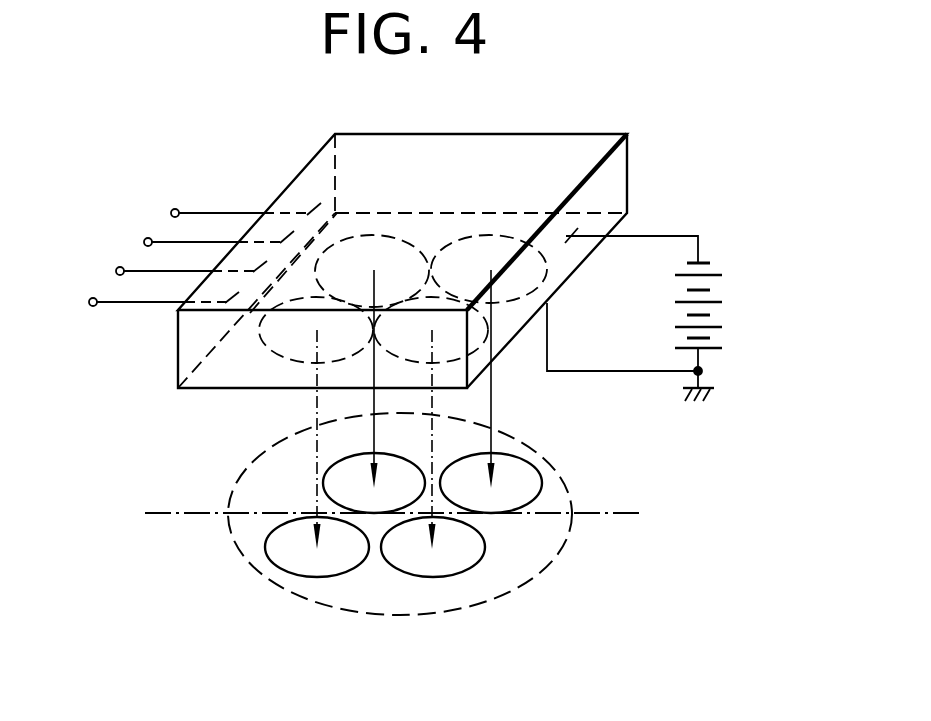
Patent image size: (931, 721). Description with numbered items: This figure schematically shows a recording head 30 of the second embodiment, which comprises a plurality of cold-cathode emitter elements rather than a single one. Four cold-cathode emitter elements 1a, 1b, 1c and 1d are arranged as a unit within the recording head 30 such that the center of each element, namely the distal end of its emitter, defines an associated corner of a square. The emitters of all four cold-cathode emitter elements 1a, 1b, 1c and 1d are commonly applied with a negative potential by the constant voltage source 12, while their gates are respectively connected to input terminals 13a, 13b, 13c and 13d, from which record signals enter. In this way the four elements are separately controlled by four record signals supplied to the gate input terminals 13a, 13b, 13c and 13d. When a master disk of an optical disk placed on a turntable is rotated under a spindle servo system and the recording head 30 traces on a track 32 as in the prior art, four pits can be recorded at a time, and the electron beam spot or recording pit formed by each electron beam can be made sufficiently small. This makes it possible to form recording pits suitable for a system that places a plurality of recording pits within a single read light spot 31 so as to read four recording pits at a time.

The cold-cathode emitter element 1a is at (372, 374).
The cold-cathode emitter element 1b is at (316, 437).
The cold-cathode emitter element 1c is at (489, 374).
The cold-cathode emitter element 1d is at (431, 437).
The constant voltage source 12 is at (722, 292).
The input terminal 13a is at (171, 209).
The input terminal 13b is at (144, 238).
The input terminal 13c is at (116, 267).
The input terminal 13d is at (90, 298).
The recording head 30 is at (583, 133).
The read light spot 31 is at (566, 482).
The track 32 is at (623, 510).